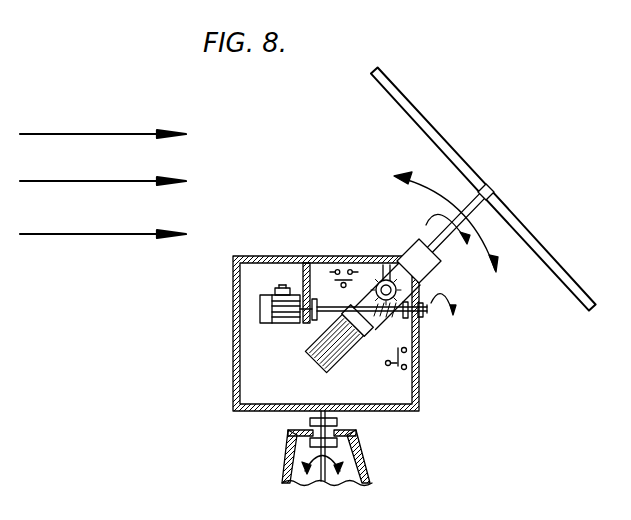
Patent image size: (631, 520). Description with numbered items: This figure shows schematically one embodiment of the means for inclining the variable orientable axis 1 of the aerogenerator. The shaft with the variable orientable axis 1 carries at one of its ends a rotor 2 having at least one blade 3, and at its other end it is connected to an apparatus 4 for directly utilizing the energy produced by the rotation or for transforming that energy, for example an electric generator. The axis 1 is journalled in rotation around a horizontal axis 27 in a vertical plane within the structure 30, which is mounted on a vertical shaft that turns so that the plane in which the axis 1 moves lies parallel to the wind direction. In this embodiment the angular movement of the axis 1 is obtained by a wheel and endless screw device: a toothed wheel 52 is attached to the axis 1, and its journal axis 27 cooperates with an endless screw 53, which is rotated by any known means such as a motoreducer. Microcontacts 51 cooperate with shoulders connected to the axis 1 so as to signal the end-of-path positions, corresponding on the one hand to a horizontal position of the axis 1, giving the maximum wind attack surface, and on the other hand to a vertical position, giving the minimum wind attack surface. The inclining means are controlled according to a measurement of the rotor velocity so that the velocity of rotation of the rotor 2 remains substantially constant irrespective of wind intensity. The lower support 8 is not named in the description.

The variable orientable axis 1 is at (410, 247).
The rotor 2 is at (494, 190).
The blade 3 is at (576, 287).
The apparatus 4 is at (313, 361).
The support stand 8 is at (333, 417).
The horizontal axis 27 is at (377, 262).
The structure 30 is at (418, 394).
The microcontacts 51 is at (386, 372).
The toothed wheel 52 is at (372, 280).
The endless screw 53 is at (398, 322).